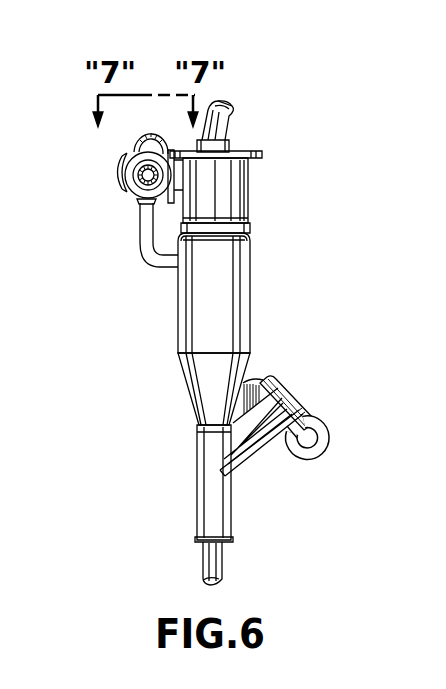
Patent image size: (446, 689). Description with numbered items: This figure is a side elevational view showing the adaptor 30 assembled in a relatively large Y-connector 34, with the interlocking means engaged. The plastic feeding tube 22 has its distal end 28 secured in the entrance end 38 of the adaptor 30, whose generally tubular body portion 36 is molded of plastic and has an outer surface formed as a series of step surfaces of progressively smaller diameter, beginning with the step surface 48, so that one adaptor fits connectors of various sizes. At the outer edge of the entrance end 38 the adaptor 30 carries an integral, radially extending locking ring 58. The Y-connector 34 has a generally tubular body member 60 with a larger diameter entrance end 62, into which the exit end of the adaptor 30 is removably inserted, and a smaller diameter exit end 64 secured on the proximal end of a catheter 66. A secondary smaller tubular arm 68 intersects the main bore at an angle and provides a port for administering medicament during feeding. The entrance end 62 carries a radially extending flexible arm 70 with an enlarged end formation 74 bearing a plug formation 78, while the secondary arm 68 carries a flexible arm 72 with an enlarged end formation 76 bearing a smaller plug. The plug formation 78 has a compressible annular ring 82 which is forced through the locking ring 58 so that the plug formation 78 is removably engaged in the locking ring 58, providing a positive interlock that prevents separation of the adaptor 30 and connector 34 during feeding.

The feeding tube 22 is at (233, 108).
The distal end of the feeding tube 28 is at (234, 130).
The entrance end 38 is at (262, 154).
The adaptor 30 is at (256, 195).
The step surface 48 is at (250, 181).
The tubular body portion 36 is at (251, 226).
The entrance end of the connector 62 is at (251, 239).
The Y-connector 34 is at (258, 289).
The tubular body member 60 is at (184, 374).
The exit end of the connector 64 is at (197, 495).
The catheter 66 is at (202, 553).
The secondary tubular arm 68 is at (255, 451).
The enlarged end formation 76 is at (290, 384).
The flexible arm 72 is at (331, 445).
The locking ring 58 is at (126, 170).
The plug formation 78 is at (137, 182).
The enlarged end formation 74 is at (160, 133).
The compressible annular ring 82 is at (140, 202).
The flexible arm 70 is at (150, 258).